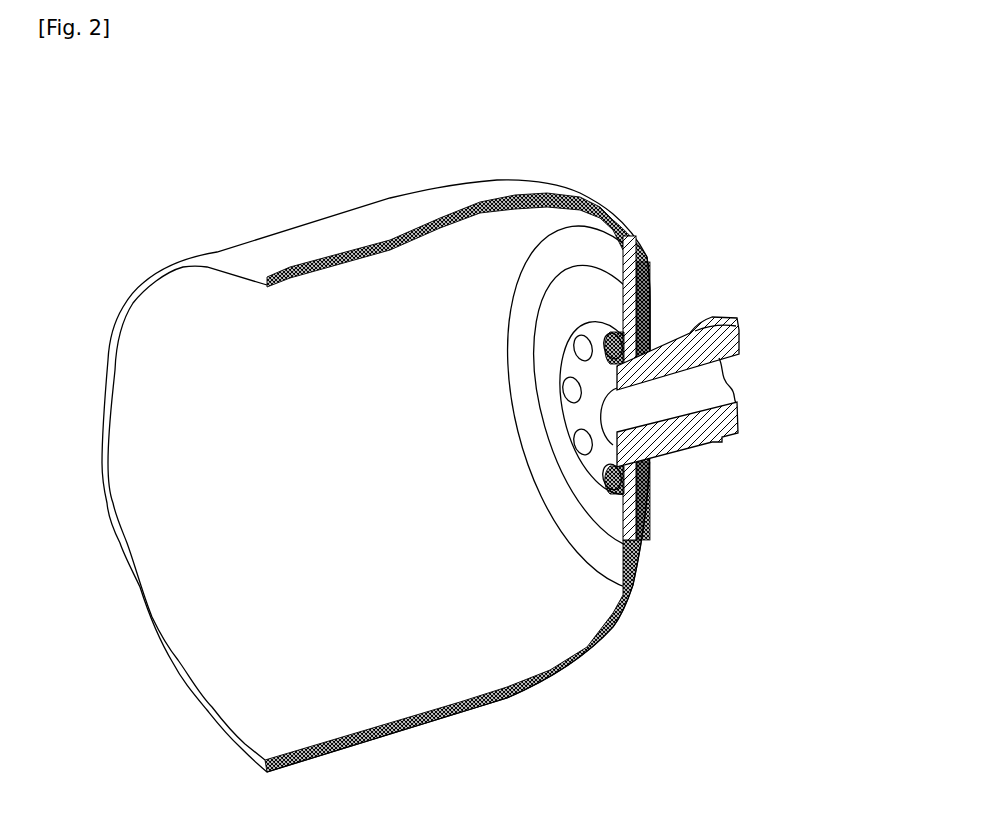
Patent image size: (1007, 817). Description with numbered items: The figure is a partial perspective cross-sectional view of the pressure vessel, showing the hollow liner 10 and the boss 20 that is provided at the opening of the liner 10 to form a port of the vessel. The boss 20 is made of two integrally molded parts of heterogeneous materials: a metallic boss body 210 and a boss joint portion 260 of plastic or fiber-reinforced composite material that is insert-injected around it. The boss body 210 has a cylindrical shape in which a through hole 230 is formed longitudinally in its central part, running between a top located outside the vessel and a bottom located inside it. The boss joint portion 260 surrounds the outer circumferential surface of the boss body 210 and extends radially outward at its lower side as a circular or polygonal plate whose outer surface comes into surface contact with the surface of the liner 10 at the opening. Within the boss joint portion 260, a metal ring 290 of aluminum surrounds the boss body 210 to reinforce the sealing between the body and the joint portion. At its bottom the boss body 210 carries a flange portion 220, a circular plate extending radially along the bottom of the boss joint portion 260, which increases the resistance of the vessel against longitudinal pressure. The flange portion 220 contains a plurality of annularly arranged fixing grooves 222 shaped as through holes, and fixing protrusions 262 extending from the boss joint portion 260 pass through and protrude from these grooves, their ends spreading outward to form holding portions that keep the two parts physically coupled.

The liner 10 is at (381, 215).
The boss 20 is at (665, 369).
The boss body 210 is at (740, 337).
The flange portion 220 is at (595, 340).
The fixing grooves 222 is at (650, 477).
The through hole 230 is at (699, 393).
The boss joint portion 260 is at (653, 308).
The fixing protrusions 262 is at (566, 348).
The metal ring 290 is at (653, 500).